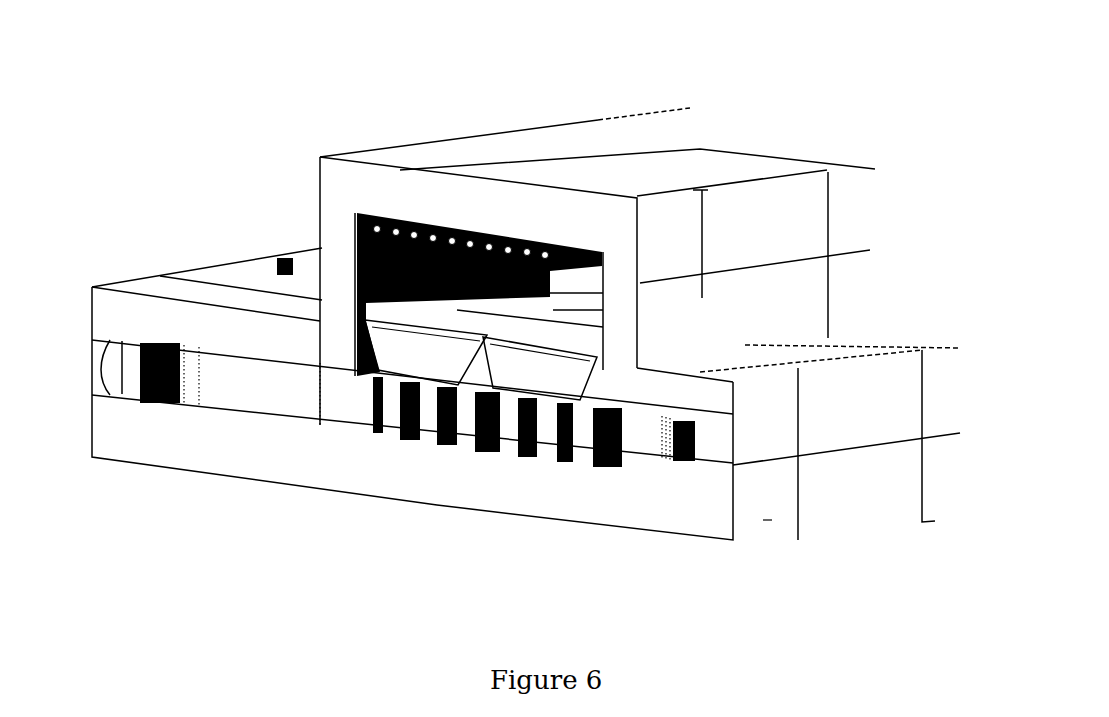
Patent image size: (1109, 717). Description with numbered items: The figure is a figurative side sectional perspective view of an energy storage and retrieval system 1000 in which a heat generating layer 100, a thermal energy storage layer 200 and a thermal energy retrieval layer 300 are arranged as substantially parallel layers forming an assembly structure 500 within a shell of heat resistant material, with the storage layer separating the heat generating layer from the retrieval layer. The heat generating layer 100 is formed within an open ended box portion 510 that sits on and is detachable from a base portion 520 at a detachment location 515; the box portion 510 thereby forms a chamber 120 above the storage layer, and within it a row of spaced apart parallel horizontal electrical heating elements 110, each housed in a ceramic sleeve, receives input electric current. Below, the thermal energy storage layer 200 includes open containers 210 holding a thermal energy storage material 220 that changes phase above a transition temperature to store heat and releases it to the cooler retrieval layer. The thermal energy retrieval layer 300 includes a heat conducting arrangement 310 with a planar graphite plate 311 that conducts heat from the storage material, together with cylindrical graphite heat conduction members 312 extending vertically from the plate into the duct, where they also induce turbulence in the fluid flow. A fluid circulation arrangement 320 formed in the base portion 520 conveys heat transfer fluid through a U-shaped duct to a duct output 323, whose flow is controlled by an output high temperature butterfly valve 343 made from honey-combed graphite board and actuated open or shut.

The energy storage and retrieval system 1000 is at (273, 121).
The heat generating layer 100 is at (586, 283).
The electrical heating elements 110 is at (389, 220).
The chamber 120 is at (483, 275).
The thermal energy storage layer 200 is at (360, 328).
The open containers 210 is at (506, 326).
The thermal energy storage material 220 is at (422, 334).
The thermal energy retrieval layer 300 is at (682, 452).
The heat conducting arrangement 310 is at (512, 412).
The planar graphite plate 311 is at (494, 373).
The heat conduction members 312 is at (402, 434).
The fluid circulation arrangement 320 is at (222, 368).
The duct output 323 is at (122, 372).
The output high temperature butterfly valve 343 is at (178, 404).
The assembly structure 500 is at (273, 268).
The box portion 510 is at (468, 146).
The detachment location 515 is at (650, 361).
The base portion 520 is at (898, 344).